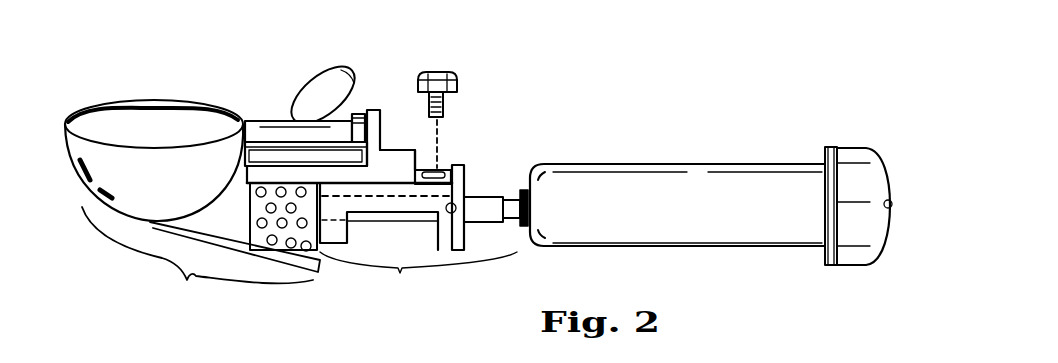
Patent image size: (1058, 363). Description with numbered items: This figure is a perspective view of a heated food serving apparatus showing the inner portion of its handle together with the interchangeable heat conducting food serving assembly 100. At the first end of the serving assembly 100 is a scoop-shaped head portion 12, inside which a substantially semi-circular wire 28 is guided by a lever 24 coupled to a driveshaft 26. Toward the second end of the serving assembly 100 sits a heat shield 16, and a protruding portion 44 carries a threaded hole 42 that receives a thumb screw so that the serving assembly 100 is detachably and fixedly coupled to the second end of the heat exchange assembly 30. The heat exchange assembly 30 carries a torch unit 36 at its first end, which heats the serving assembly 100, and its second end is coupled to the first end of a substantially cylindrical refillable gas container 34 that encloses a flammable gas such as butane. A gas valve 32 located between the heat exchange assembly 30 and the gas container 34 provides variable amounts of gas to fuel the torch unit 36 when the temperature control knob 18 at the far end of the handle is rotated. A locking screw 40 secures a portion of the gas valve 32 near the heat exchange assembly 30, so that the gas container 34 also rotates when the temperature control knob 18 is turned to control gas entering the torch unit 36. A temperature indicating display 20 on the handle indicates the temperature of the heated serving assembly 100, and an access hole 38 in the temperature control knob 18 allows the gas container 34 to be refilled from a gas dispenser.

The interchangeable heat conducting food serving assembly 100 is at (187, 283).
The scoop-shaped head portion 12 is at (122, 186).
The substantially semi-circular wire 28 is at (160, 101).
The lever 24 is at (337, 65).
The driveshaft 26 is at (265, 120).
The heat shield 16 is at (325, 258).
The heat exchange assembly 30 is at (402, 279).
The threaded hole 42 is at (440, 168).
The protruding portion 44 is at (418, 168).
The temperature indicating display 20 is at (442, 71).
The locking screw 40 is at (446, 213).
The torch unit 36 is at (480, 224).
The gas valve 32 is at (523, 189).
The substantially cylindrical refillable gas container 34 is at (687, 219).
The temperature control knob 18 is at (855, 152).
The access hole 38 is at (894, 204).